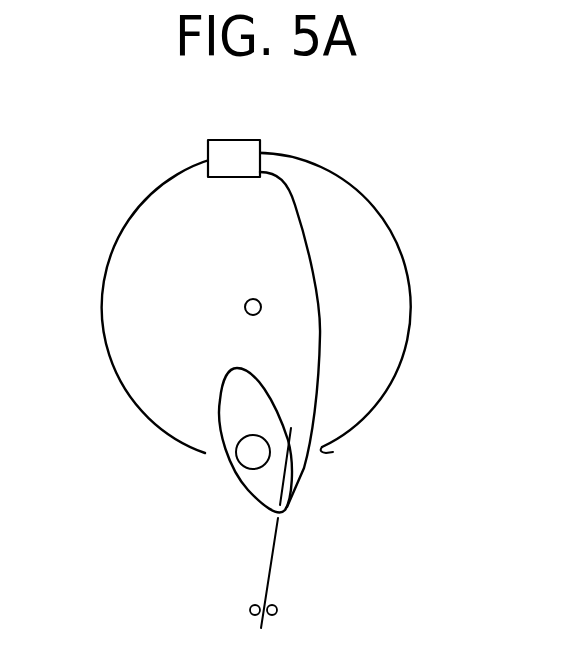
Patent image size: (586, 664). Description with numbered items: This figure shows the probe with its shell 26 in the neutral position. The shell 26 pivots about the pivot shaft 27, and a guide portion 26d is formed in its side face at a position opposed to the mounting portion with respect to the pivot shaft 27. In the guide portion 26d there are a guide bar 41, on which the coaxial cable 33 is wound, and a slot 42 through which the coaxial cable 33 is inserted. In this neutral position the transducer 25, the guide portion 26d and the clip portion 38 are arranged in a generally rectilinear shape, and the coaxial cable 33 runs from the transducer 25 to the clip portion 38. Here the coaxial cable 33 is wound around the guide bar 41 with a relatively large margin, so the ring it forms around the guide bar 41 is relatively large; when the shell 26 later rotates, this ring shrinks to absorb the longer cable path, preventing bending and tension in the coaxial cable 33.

The transducer 25 is at (247, 151).
The shell 26 is at (407, 302).
The guide portion 26d is at (205, 485).
The pivot shaft 27 is at (245, 307).
The coaxial cable 33 is at (272, 567).
The clip portion 38 is at (277, 607).
The guide bar 41 is at (258, 457).
The slot 42 is at (333, 452).